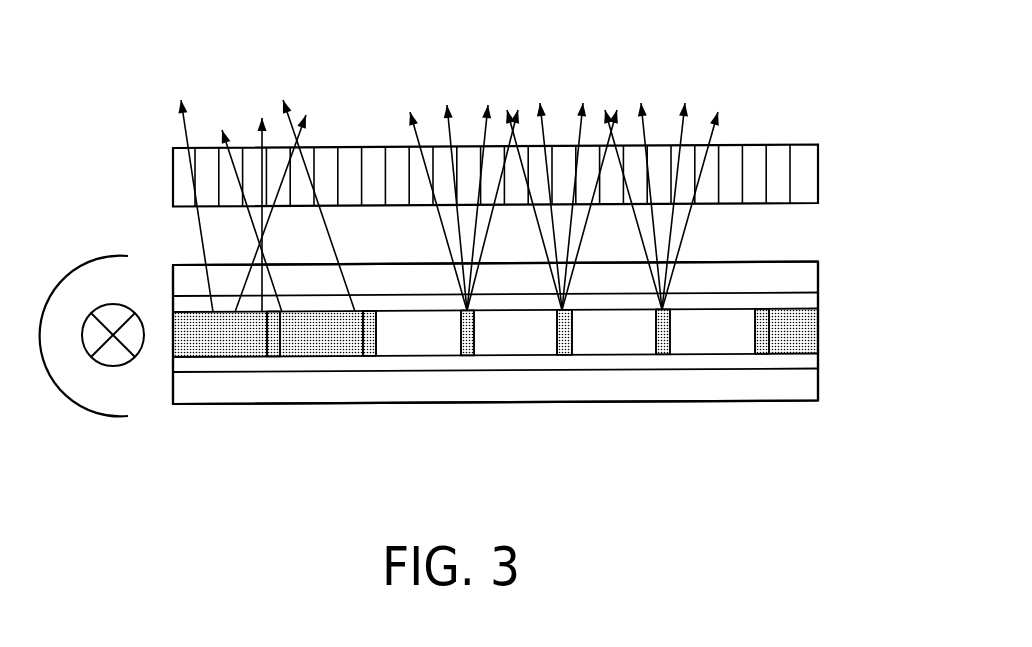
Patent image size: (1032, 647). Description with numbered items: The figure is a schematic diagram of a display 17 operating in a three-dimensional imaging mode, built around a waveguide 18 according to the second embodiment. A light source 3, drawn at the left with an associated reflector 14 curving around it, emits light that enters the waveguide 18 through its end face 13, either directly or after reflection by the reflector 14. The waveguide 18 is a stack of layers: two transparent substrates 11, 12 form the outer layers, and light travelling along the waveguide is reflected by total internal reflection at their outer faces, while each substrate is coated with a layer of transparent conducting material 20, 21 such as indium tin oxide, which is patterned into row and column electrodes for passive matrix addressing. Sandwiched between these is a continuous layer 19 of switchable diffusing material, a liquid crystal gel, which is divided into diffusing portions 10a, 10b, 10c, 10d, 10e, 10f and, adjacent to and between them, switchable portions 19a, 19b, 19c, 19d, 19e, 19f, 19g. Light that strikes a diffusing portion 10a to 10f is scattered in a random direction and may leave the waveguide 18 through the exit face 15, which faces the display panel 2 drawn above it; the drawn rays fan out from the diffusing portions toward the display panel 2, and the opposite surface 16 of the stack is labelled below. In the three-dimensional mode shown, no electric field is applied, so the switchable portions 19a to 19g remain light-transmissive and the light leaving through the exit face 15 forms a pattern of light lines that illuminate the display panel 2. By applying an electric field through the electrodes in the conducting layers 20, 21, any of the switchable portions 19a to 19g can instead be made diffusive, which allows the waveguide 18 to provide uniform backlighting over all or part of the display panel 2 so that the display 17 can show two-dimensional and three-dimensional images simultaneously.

The display 17 is at (113, 66).
The waveguide 18 is at (160, 246).
The display panel 2 is at (777, 144).
The light source 3 is at (134, 306).
The reflector 14 is at (80, 406).
The end face 13 is at (172, 346).
The exit face 15 is at (780, 262).
The lower surface 16 is at (206, 405).
The transparent substrate 11 is at (821, 268).
The transparent conducting layer 20 is at (821, 302).
The continuous layer of switchable diffusing material 19 is at (533, 333).
The switchable portion 19a is at (220, 334).
The switchable portion 19b is at (321, 333).
The switchable portion 19c is at (418, 333).
The switchable portion 19d is at (515, 332).
The switchable portion 19e is at (614, 332).
The switchable portion 19f is at (712, 331).
The switchable portion 19g is at (793, 331).
The transparent conducting layer 21 is at (821, 360).
The transparent substrate 12 is at (821, 392).
The diffusing portion 10a is at (273, 357).
The diffusing portion 10b is at (370, 356).
The diffusing portion 10c is at (468, 356).
The diffusing portion 10d is at (564, 356).
The diffusing portion 10e is at (663, 355).
The diffusing portion 10f is at (762, 354).